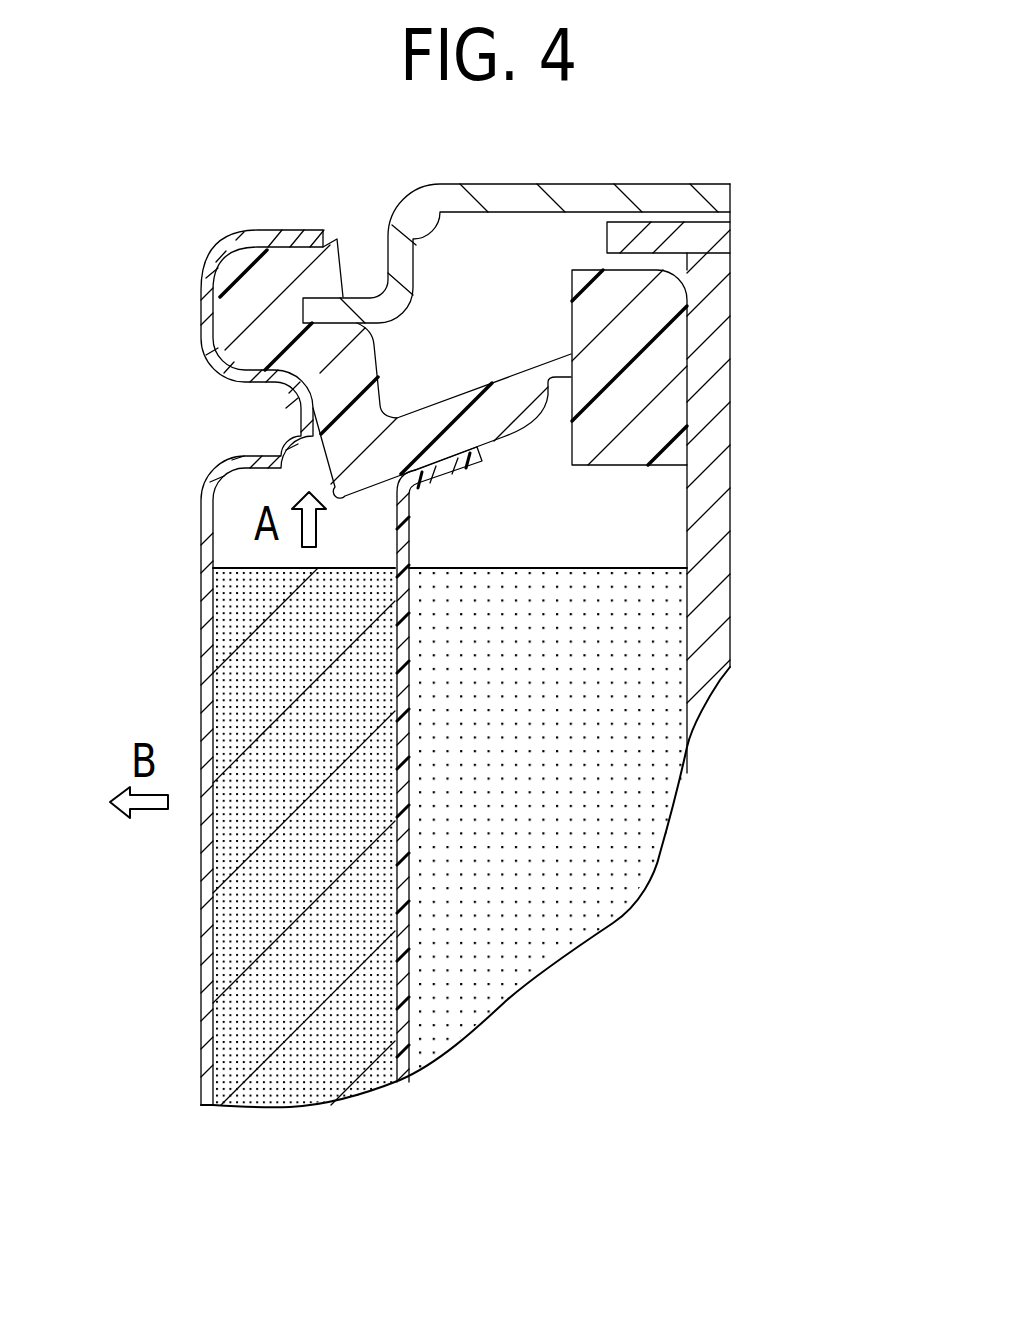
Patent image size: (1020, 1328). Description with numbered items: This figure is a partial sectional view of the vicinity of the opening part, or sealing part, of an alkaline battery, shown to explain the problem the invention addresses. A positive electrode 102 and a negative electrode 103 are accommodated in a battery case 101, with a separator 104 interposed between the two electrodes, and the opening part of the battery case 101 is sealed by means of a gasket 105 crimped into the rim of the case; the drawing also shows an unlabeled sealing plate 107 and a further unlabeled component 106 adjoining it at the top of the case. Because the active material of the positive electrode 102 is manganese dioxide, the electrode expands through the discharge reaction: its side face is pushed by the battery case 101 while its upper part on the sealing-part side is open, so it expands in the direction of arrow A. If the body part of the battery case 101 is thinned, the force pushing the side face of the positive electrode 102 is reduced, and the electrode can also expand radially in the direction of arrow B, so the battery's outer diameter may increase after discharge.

The battery case 101 is at (203, 940).
The positive electrode 102 is at (297, 1100).
The negative electrode 103 is at (598, 908).
The separator 104 is at (398, 953).
The gasket 105 is at (280, 263).
The filter 106 is at (722, 360).
The sealing plate 107 is at (583, 187).